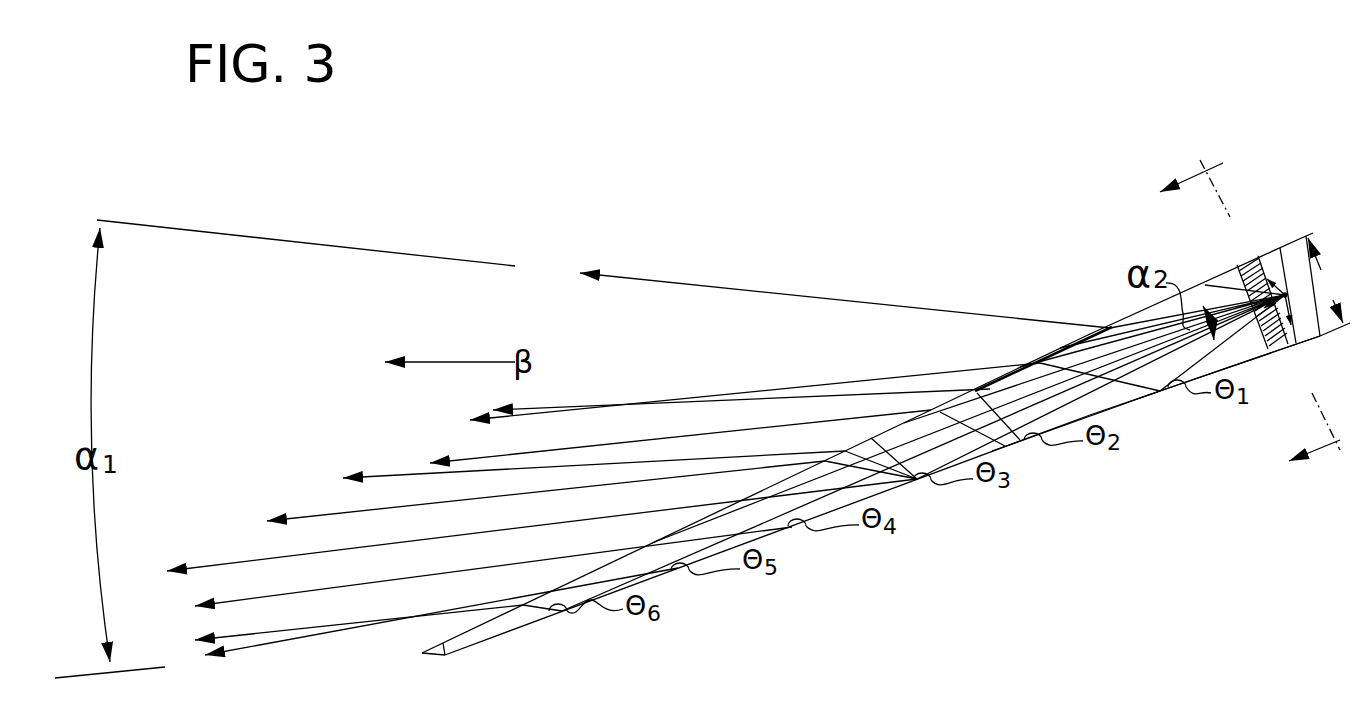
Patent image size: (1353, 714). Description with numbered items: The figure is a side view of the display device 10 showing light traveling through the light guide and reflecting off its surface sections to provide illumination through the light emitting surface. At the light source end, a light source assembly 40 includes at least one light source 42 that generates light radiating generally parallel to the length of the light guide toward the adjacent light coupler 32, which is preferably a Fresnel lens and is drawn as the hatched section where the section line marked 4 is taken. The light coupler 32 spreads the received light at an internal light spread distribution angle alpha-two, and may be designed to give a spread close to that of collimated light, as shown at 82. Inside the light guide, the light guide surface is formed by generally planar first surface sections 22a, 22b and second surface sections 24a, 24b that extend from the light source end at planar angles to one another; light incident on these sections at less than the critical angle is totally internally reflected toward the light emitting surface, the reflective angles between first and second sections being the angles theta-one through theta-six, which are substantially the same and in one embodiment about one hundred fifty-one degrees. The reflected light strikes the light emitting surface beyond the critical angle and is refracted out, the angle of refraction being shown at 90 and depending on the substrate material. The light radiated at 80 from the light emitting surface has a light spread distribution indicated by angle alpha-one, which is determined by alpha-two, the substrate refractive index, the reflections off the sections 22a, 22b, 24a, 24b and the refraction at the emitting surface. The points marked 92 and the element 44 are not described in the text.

The display device 10 is at (1073, 532).
The first surface section 22a is at (1237, 366).
The first surface section 22b is at (1127, 413).
The second surface section 24a is at (1143, 396).
The second surface section 24b is at (1018, 442).
The light coupler 32 is at (1240, 263).
The light source assembly 40 is at (1283, 247).
The light source 42 is at (1273, 250).
The light entry point / source 44 is at (1279, 249).
The light radiated from the light emitting surface 80 is at (757, 242).
The near-collimated light spread 82 is at (1104, 325).
The angle of refraction at the light emitting surface 90 is at (1045, 356).
The facet junction / reflection point 92 is at (1152, 399).
The section line 4- 4 is at (1250, 315).